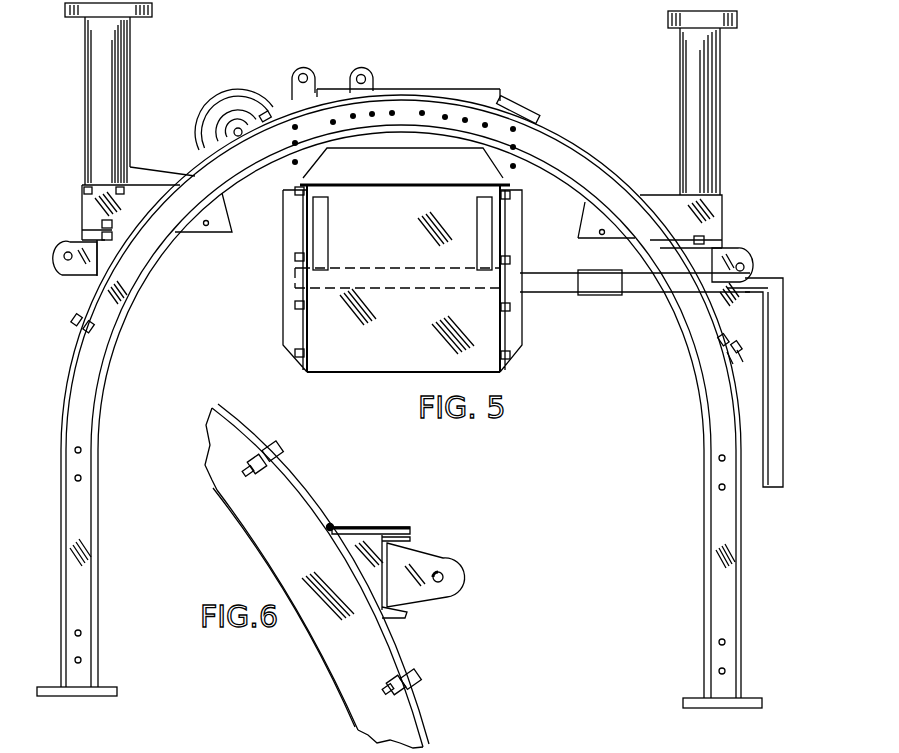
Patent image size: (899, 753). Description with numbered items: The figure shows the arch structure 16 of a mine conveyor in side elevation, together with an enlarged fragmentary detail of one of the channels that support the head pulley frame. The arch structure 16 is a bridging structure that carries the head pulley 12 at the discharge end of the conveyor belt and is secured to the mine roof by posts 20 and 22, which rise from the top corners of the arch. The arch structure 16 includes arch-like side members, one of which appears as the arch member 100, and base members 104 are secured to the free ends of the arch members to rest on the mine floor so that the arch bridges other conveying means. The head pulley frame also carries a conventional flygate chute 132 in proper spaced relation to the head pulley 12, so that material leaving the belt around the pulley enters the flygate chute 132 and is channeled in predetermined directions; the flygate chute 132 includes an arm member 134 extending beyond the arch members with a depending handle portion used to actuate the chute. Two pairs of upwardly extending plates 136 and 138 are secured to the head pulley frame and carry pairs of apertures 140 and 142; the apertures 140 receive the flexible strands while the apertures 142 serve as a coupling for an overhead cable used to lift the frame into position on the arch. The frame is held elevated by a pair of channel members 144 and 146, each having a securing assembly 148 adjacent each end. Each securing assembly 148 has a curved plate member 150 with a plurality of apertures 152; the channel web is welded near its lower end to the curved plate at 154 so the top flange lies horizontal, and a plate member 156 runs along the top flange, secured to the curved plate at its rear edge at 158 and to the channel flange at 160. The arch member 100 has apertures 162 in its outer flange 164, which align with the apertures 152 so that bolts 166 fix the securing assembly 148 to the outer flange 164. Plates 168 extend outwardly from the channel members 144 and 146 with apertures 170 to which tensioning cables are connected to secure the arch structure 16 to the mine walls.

In FIG. 5, the head pulley 12 is at (208, 113).
In FIG. 5, the arch structure 16 is at (410, 355).
In FIG. 5, the post 20 is at (722, 100).
In FIG. 5, the post 22 is at (86, 90).
In FIG. 5, the arch member 100 is at (96, 583).
In FIG. 5, the base member 104 is at (100, 688).
In FIG. 5, the flygate chute 132 is at (412, 260).
In FIG. 5, the arm member 134 is at (778, 256).
In FIG. 5, the upwardly extending plate 136 is at (374, 74).
In FIG. 5, the upwardly extending plate 138 is at (383, 69).
In FIG. 5, the aperture 140 is at (308, 72).
In FIG. 5, the aperture 142 is at (366, 70).
In FIG. 5, the channel member 144 is at (92, 274).
In FIG. 5, the channel member 146 is at (722, 296).
In FIG. 6, the channel member 146 is at (446, 569).
In FIG. 5, the securing assembly 148 is at (125, 261).
In FIG. 6, the securing assembly 148 is at (355, 576).
In FIG. 6, the curved plate member 150 is at (403, 656).
In FIG. 6, the securing assembly aperture 152 is at (262, 452).
In FIG. 6, the weld 154 is at (395, 615).
In FIG. 6, the plate member 156 is at (352, 527).
In FIG. 6, the securing point 158 is at (333, 525).
In FIG. 6, the securing point 160 is at (404, 538).
In FIG. 6, the arch member aperture 162 is at (269, 478).
In FIG. 6, the outer flange 164 is at (292, 500).
In FIG. 6, the bolt 166 is at (280, 450).
In FIG. 6, the plate 168 is at (454, 565).
In FIG. 6, the aperture 170 is at (446, 577).